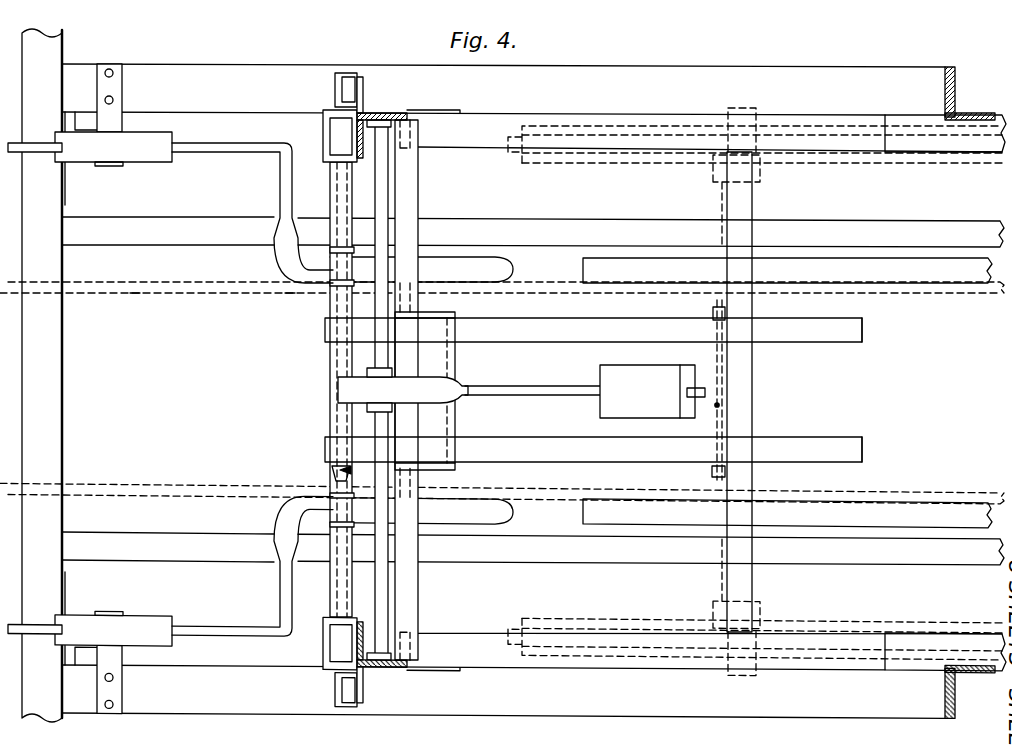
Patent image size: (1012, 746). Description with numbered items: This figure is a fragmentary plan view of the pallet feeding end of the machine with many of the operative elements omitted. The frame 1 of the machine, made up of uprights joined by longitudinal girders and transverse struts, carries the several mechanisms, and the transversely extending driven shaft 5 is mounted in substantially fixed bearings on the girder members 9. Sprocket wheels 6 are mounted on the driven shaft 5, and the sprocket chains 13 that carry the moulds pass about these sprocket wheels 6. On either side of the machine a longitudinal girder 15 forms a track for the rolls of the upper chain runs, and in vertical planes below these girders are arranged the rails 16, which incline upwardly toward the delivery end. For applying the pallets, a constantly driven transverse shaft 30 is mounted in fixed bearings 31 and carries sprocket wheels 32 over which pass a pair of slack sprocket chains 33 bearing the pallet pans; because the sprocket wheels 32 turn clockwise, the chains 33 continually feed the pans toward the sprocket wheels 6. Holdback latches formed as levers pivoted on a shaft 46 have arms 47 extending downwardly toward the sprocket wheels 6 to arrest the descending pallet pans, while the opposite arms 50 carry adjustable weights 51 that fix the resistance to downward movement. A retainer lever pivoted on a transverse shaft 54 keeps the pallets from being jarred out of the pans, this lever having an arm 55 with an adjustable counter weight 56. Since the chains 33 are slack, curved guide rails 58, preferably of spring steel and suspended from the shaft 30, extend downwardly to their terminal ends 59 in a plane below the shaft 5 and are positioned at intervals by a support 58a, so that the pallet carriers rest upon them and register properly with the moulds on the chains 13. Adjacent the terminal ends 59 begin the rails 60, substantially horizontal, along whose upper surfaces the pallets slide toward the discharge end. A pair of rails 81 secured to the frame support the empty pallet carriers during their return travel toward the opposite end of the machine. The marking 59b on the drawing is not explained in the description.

The frame 1 is at (958, 77).
The driven shaft 5 is at (718, 197).
The sprocket wheels 6 is at (800, 135).
The girder members 9 is at (606, 70).
The sprocket chains 13 is at (597, 160).
The longitudinal girder 15 is at (987, 146).
The rails 16 is at (835, 143).
The transverse shaft 30 is at (330, 352).
The fixed bearings 31 is at (336, 75).
The sprocket wheels 32 is at (288, 294).
The sprocket chains 33 is at (135, 293).
The shaft 46 is at (338, 478).
The arms 47 is at (478, 256).
The opposite arms 50 is at (217, 145).
The adjustable weights 51 is at (135, 137).
The transverse shaft 54 is at (338, 416).
The arm 55 is at (540, 386).
The adjustable counter weight 56 is at (652, 391).
The curved guide rails 58 is at (632, 340).
The support 58a is at (458, 417).
The terminal ends 59 is at (864, 326).
The pin 59b is at (719, 405).
The rails 60 is at (612, 257).
The rails 81 is at (177, 220).